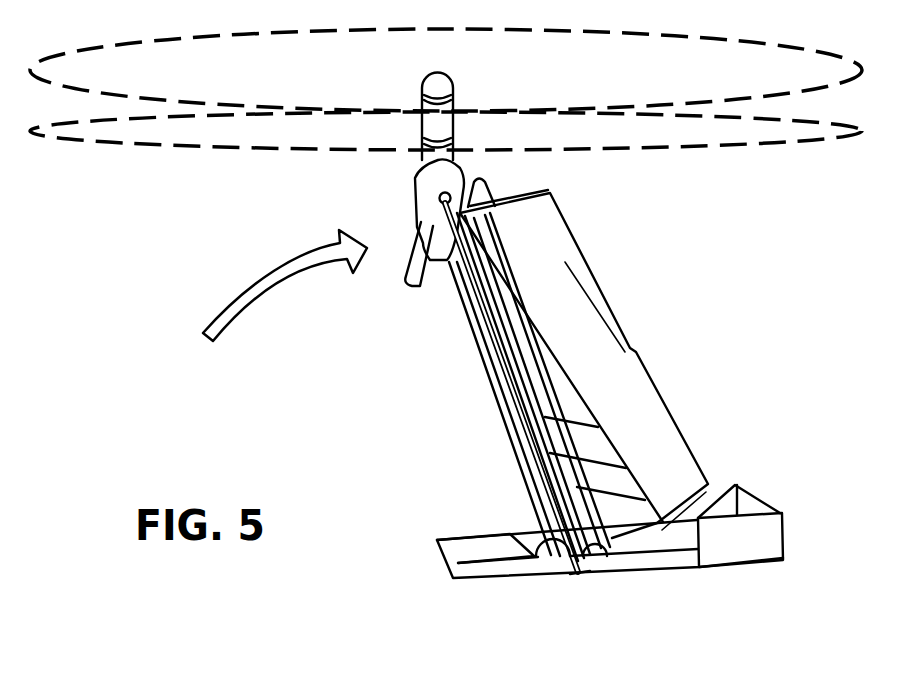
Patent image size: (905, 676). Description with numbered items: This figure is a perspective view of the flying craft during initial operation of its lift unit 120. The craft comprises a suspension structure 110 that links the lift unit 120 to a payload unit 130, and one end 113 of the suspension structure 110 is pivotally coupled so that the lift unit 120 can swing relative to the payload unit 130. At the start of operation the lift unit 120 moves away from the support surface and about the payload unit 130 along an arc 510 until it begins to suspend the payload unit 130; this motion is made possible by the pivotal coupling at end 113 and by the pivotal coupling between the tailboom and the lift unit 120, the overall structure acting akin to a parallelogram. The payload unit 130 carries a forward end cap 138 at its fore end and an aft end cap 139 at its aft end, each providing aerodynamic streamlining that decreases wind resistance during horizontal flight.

The suspension structure 110 is at (462, 339).
The end of suspension structure 113 is at (577, 590).
The lift unit 120 is at (746, 208).
The payload unit 130 is at (583, 530).
The forward end cap 138 is at (477, 542).
The aft end cap 139 is at (663, 537).
The arc 510 is at (247, 290).